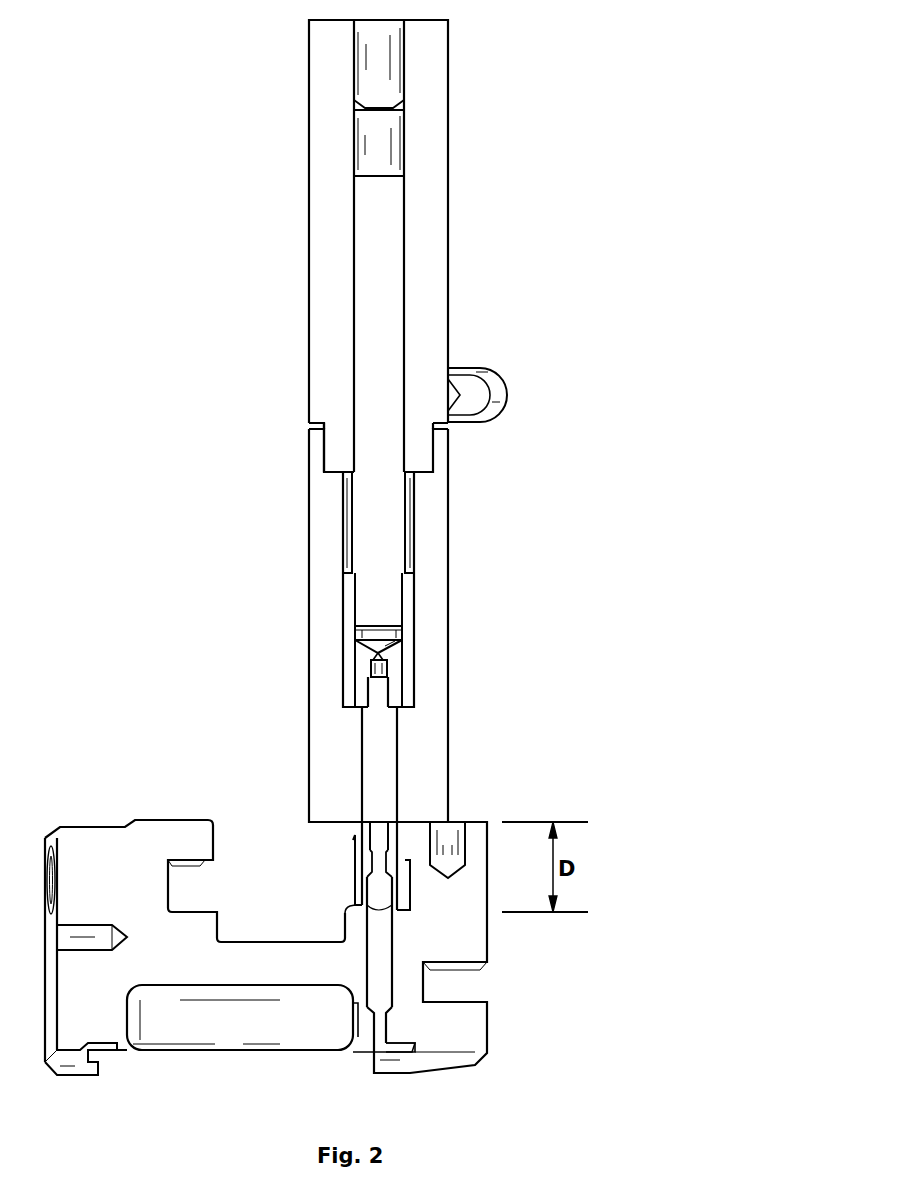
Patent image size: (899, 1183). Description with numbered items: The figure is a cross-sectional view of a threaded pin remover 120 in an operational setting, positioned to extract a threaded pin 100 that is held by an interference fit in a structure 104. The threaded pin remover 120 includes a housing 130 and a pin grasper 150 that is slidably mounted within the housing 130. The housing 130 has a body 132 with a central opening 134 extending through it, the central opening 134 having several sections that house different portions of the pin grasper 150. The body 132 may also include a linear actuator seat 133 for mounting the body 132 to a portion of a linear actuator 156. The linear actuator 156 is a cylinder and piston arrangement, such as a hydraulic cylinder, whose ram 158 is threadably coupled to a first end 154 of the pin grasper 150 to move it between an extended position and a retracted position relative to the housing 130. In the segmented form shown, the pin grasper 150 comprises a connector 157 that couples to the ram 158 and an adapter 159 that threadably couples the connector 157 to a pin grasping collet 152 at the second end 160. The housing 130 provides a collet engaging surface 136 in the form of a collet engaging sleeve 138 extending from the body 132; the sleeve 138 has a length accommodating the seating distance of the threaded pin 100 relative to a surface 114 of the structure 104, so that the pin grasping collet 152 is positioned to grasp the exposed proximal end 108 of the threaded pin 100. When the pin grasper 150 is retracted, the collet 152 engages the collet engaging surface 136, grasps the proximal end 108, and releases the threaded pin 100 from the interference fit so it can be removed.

The threaded pin 100 is at (385, 998).
The structure 104 is at (130, 872).
The proximal end 108 is at (378, 908).
The surface 114 is at (475, 822).
The threaded pin remover 120 is at (715, 20).
The housing 130 is at (452, 567).
The body 132 is at (322, 510).
The linear actuator seat 133 is at (330, 472).
The central opening 134 is at (345, 543).
The collet engaging surface 136 is at (405, 890).
The collet engaging sleeve 138 is at (357, 852).
The pin grasper 150 is at (618, 575).
The pin grasping collet 152 is at (400, 838).
The first end 154 is at (343, 607).
The linear actuator 156 is at (309, 342).
The connector 157 is at (405, 660).
The ram 158 is at (378, 586).
The adapter 159 is at (382, 748).
The second end 160 is at (362, 876).